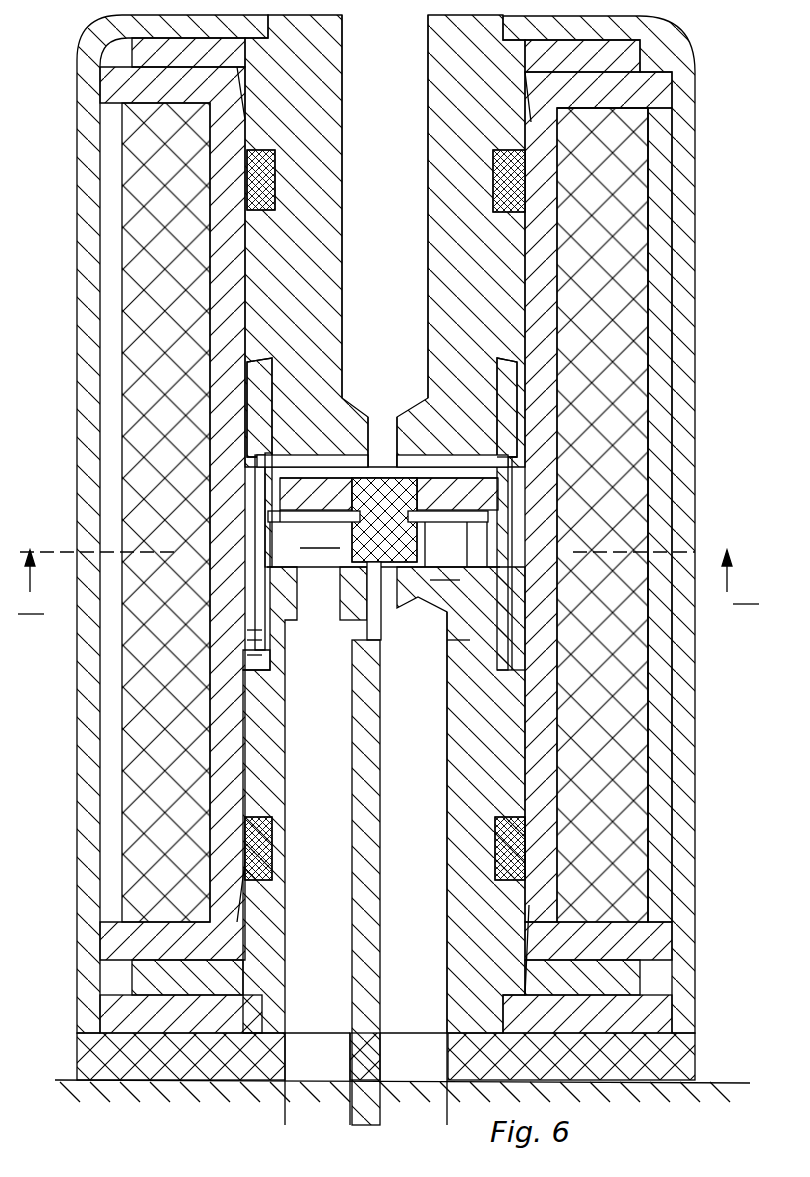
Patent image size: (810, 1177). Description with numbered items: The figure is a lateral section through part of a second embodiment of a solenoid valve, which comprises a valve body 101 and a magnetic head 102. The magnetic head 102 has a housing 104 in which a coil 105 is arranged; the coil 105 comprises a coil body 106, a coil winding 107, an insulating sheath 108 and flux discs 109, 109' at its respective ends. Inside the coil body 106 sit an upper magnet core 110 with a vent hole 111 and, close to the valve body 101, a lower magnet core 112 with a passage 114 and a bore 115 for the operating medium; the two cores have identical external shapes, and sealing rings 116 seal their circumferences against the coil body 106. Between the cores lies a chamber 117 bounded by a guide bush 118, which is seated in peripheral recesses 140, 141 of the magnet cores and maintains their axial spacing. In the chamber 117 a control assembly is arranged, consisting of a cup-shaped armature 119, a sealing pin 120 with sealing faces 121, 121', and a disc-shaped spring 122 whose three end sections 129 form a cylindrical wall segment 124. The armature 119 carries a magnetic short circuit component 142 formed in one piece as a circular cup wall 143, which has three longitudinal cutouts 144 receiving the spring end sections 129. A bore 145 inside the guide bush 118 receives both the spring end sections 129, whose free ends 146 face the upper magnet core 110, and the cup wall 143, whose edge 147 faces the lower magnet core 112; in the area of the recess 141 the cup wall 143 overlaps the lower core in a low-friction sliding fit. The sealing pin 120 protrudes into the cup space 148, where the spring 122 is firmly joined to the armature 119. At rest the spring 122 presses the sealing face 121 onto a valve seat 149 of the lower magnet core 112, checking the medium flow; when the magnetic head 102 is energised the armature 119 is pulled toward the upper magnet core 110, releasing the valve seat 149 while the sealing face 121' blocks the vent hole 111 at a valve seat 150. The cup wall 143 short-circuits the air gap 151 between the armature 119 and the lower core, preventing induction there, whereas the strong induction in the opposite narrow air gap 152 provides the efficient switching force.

The valve body 101 is at (697, 1090).
The magnetic head 102 is at (697, 906).
The housing 104 is at (683, 946).
The coil 105 is at (660, 249).
The coil body 106 is at (538, 318).
The coil winding 107 is at (608, 342).
The insulating sheath 108 is at (655, 365).
The flux disc 109 is at (438, 56).
The flux disc 109' is at (430, 995).
The upper magnet core 110 is at (500, 262).
The vent hole 111 is at (397, 253).
The lower magnet core 112 is at (505, 805).
The passage 114 is at (387, 627).
The bore 115 is at (325, 780).
The sealing rings 116 is at (512, 182).
The chamber 117 is at (437, 548).
The guide bush 118 is at (527, 395).
The armature 119 is at (485, 483).
The sealing pin 120 is at (485, 497).
The sealing face 121 is at (145, 514).
The sealing face 121' is at (618, 514).
The disc-shaped spring 122 is at (483, 528).
The cylindrical wall segment 124 is at (280, 512).
The spring end sections 129 is at (262, 495).
The peripheral recess 140 is at (500, 413).
The peripheral recess 141 is at (470, 660).
The magnetic short circuit component 142 is at (480, 625).
The circular cup wall 143 is at (455, 578).
The cutouts 144 is at (250, 640).
The bore 145 is at (262, 635).
The free ends 146 is at (273, 437).
The edge 147 is at (505, 718).
The cup space 148 is at (247, 657).
The valve seat 149 is at (250, 582).
The valve seat 150 is at (293, 466).
The air gap 151 is at (310, 528).
The narrow air gap 152 is at (275, 478).